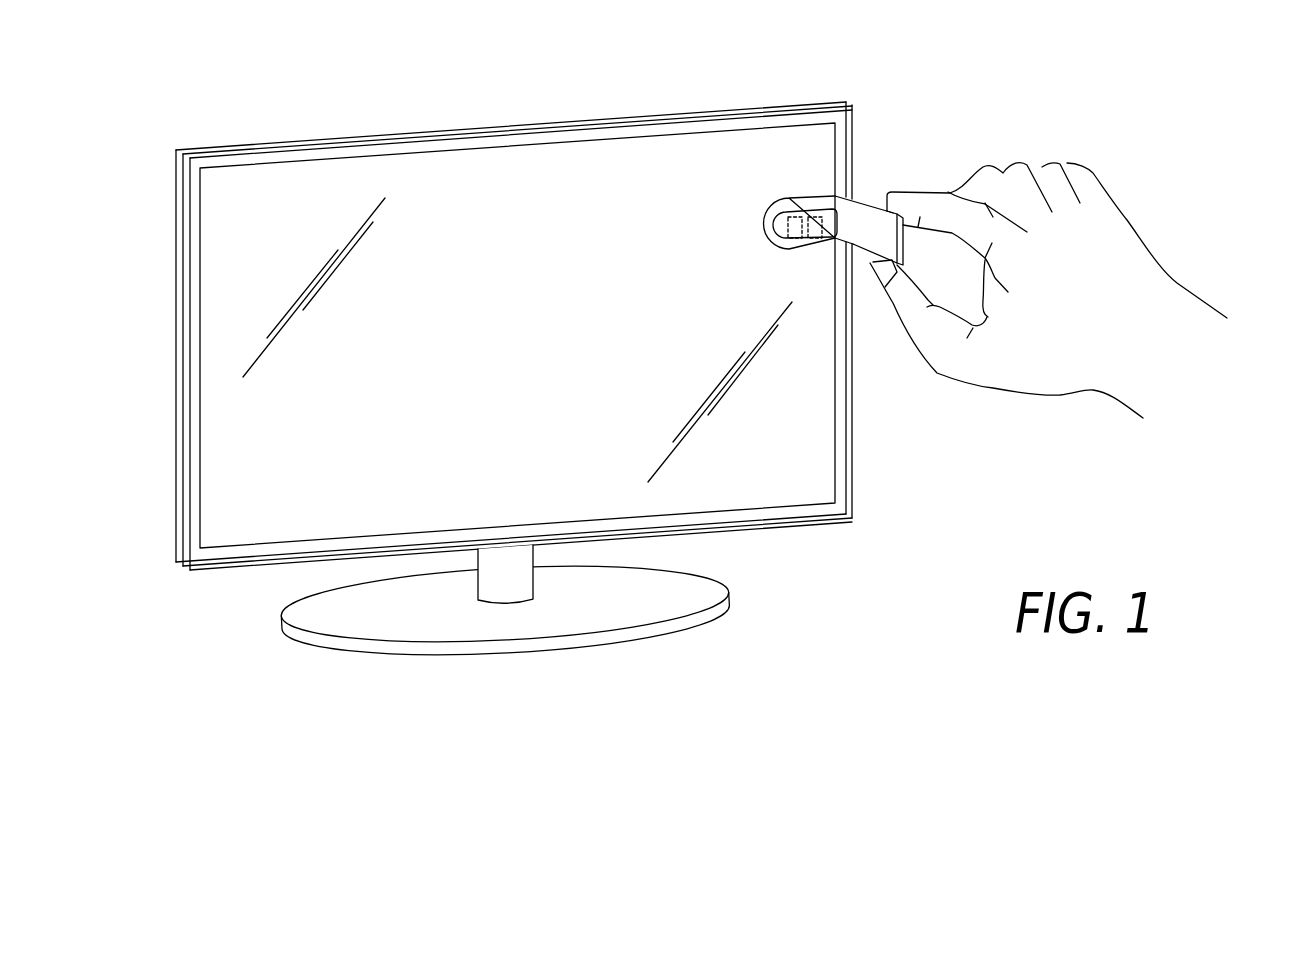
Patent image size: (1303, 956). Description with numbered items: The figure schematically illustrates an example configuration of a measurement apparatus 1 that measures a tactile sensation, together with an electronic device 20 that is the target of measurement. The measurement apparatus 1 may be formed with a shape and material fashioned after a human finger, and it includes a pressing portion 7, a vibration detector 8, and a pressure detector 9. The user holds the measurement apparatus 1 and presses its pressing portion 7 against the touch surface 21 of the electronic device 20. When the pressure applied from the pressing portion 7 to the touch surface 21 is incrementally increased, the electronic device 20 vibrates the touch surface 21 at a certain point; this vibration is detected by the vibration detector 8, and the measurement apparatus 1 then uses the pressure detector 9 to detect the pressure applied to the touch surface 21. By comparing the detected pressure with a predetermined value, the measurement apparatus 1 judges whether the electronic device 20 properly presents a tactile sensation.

The electronic device 20 is at (408, 133).
The touch surface 21 is at (470, 194).
The measurement apparatus 1 is at (817, 218).
The pressing portion 7 is at (818, 213).
The vibration detector 8 is at (794, 224).
The pressure detector 9 is at (816, 238).